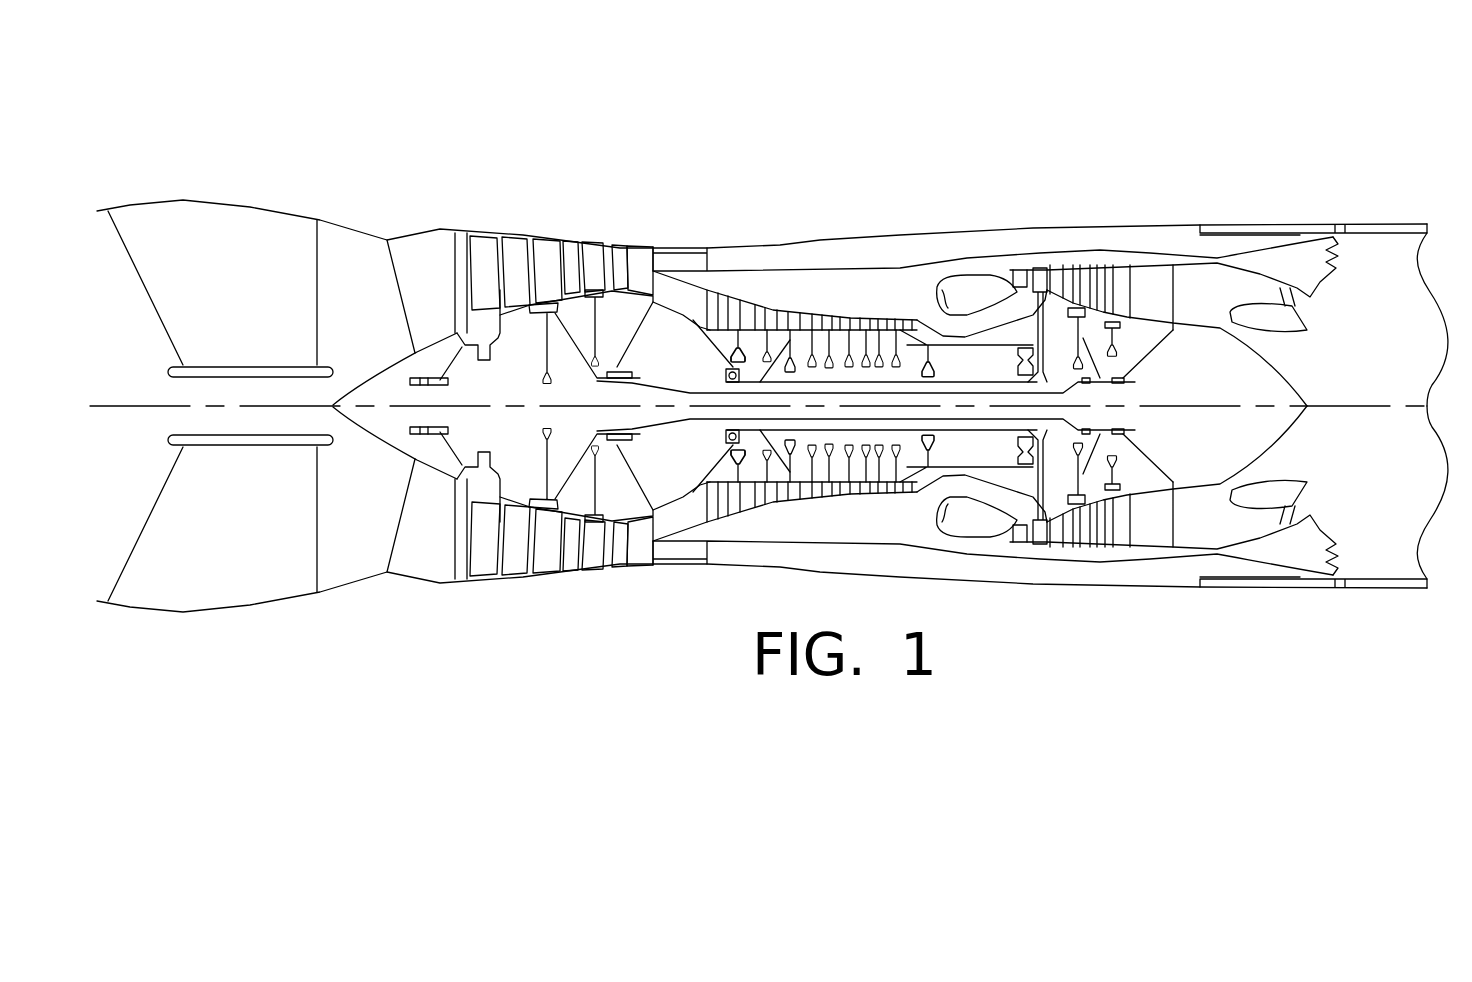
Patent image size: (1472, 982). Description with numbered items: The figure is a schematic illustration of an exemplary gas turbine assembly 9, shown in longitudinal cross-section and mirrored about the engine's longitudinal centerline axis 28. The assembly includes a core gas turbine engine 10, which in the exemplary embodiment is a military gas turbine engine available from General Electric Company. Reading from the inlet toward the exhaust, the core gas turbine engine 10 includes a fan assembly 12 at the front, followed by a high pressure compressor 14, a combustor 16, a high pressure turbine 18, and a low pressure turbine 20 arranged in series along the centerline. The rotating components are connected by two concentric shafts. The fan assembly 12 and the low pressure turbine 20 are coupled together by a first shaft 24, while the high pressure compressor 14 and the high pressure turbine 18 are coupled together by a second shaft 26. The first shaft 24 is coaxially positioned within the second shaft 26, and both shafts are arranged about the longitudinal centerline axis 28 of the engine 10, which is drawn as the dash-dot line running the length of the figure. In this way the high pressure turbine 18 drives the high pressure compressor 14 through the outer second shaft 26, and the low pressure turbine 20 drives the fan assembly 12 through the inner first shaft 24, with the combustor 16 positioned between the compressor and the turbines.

The gas turbine assembly 9 is at (1062, 115).
The core gas turbine engine 10 is at (587, 142).
The fan assembly 12 is at (510, 223).
The high pressure compressor 14 is at (797, 297).
The combustor 16 is at (958, 278).
The high pressure turbine 18 is at (1038, 268).
The low pressure turbine 20 is at (1095, 268).
The first shaft 24 is at (1130, 383).
The second shaft 26 is at (822, 382).
The longitudinal centerline axis 28 is at (1333, 406).